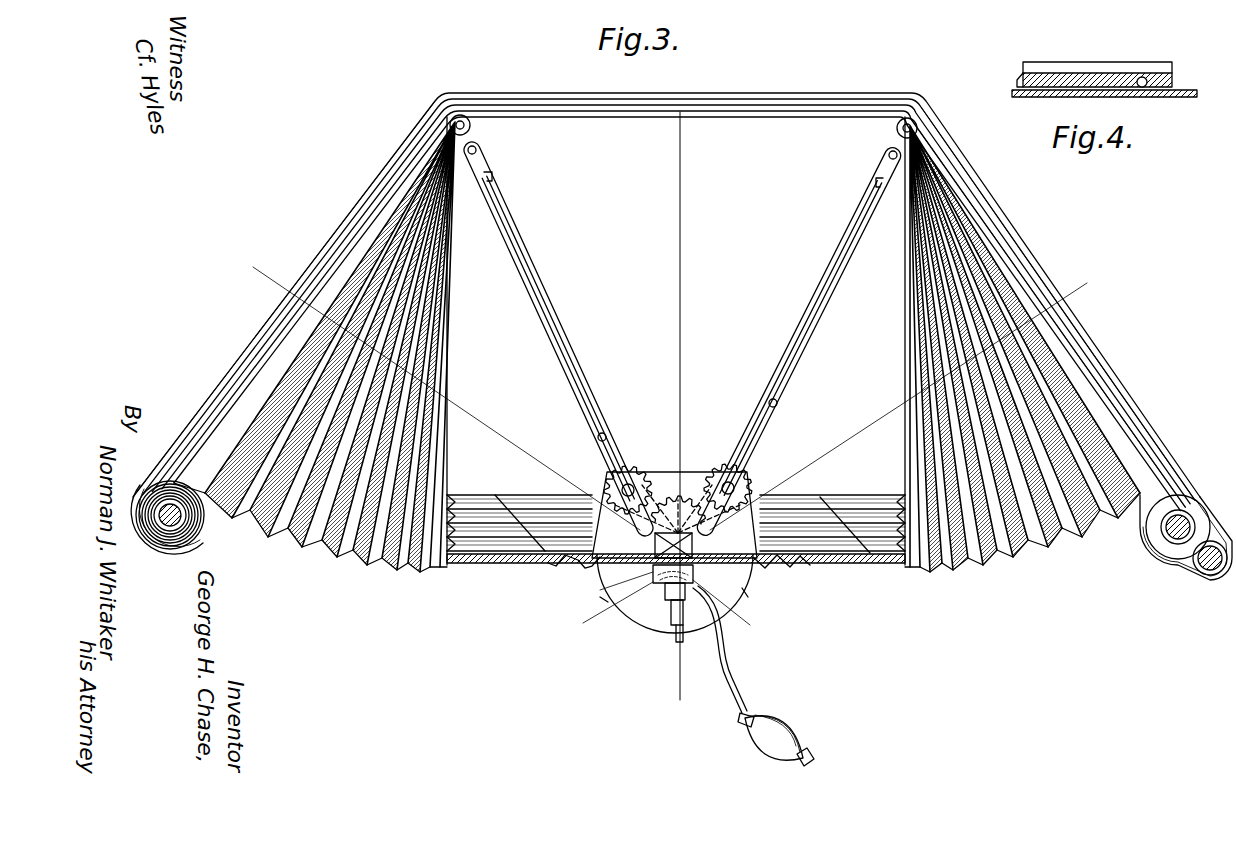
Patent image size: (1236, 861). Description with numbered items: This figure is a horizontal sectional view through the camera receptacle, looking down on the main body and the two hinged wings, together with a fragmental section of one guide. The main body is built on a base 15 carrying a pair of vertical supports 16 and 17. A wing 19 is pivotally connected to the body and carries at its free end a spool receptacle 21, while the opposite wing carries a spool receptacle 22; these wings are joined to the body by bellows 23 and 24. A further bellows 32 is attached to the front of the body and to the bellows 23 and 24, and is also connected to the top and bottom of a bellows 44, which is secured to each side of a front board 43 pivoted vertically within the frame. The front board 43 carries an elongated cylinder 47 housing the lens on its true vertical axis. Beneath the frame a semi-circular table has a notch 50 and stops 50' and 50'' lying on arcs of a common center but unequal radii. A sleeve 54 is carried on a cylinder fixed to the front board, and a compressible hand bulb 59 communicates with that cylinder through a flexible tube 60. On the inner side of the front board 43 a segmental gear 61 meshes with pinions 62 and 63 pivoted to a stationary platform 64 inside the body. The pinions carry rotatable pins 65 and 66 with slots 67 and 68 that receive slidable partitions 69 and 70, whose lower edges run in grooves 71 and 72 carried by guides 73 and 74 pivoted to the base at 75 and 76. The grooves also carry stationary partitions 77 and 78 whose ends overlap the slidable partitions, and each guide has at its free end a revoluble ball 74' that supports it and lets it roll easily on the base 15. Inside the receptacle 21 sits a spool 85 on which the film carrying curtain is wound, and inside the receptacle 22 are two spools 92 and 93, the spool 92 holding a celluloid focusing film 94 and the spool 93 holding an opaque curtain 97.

In FIG. 3, the base 15 is at (666, 396).
In FIG. 4, the base 15 is at (1195, 95).
In FIG. 3, the vertical support 16 is at (455, 96).
In FIG. 3, the vertical support 17 is at (921, 101).
In FIG. 3, the wing 19 is at (265, 352).
In FIG. 3, the spool receptacle 21 is at (170, 551).
In FIG. 3, the spool receptacle 22 is at (1183, 570).
In FIG. 3, the bellows 23 is at (317, 540).
In FIG. 3, the bellows 24 is at (1048, 553).
In FIG. 3, the bellows 32 is at (480, 535).
In FIG. 3, the front board 43 is at (745, 590).
In FIG. 3, the bellows 44 is at (550, 565).
In FIG. 3, the elongated cylinder 47 is at (650, 590).
In FIG. 3, the notch 50 is at (711, 585).
In FIG. 3, the stop 50' is at (662, 627).
In FIG. 3, the stop 50'' is at (640, 594).
In FIG. 3, the sleeve 54 is at (681, 622).
In FIG. 3, the compressible hand bulb 59 is at (788, 724).
In FIG. 3, the flexible tube 60 is at (722, 662).
In FIG. 3, the segmental gear 61 is at (746, 500).
In FIG. 3, the pinion 62 is at (638, 478).
In FIG. 3, the pinion 63 is at (718, 458).
In FIG. 3, the stationary platform 64 is at (686, 478).
In FIG. 3, the rotatable pin 65 is at (640, 447).
In FIG. 3, the rotatable pin 66 is at (753, 454).
In FIG. 3, the slot 67 is at (608, 478).
In FIG. 3, the slot 68 is at (740, 481).
In FIG. 3, the slidable partition 69 is at (596, 435).
In FIG. 3, the slidable partition 70 is at (778, 404).
In FIG. 3, the groove 71 is at (493, 177).
In FIG. 3, the groove 72 is at (876, 176).
In FIG. 4, the groove 72 is at (1053, 70).
In FIG. 3, the guide 73 is at (541, 287).
In FIG. 3, the guide 74 is at (798, 342).
In FIG. 4, the guide 74 is at (1006, 64).
In FIG. 4, the revoluble ball 74' is at (1151, 60).
In FIG. 3, the pivot 75 is at (485, 153).
In FIG. 3, the pivot 76 is at (883, 157).
In FIG. 3, the stationary partition 77 is at (517, 232).
In FIG. 3, the stationary partition 78 is at (862, 223).
In FIG. 3, the spool 85 is at (170, 506).
In FIG. 3, the spool 92 is at (1190, 520).
In FIG. 3, the spool 93 is at (1208, 576).
In FIG. 3, the focusing film 94 is at (1107, 382).
In FIG. 3, the opaque curtain 97 is at (1137, 427).